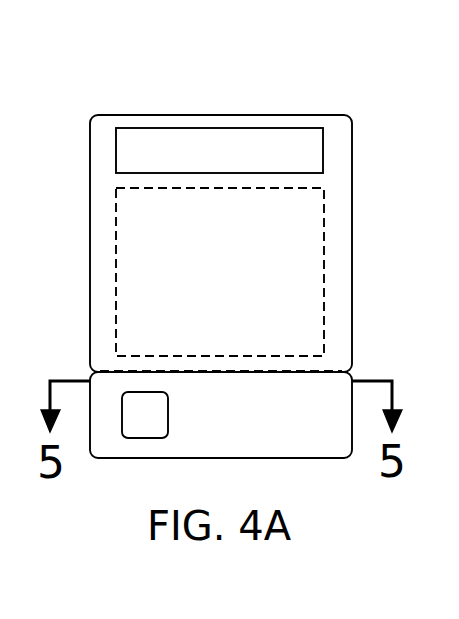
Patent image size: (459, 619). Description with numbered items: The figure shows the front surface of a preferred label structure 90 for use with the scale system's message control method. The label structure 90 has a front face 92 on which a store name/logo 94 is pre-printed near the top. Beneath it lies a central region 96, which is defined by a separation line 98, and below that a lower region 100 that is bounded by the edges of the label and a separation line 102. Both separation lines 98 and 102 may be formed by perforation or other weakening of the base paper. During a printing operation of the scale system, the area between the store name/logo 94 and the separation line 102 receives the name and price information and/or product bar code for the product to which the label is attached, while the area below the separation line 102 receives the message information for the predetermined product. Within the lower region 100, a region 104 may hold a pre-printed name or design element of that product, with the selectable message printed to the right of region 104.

The label structure 90 is at (217, 269).
The front face 92 is at (103, 143).
The store name/logo 94 is at (130, 138).
The central region 96 is at (127, 209).
The separation line 98 is at (116, 272).
The lower region 100 is at (295, 435).
The separation line 102 is at (213, 371).
The region 104 is at (165, 415).